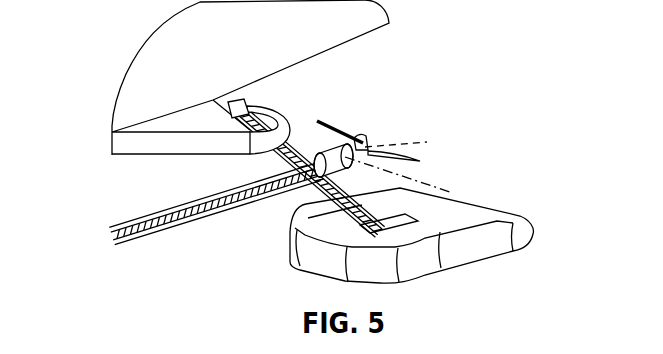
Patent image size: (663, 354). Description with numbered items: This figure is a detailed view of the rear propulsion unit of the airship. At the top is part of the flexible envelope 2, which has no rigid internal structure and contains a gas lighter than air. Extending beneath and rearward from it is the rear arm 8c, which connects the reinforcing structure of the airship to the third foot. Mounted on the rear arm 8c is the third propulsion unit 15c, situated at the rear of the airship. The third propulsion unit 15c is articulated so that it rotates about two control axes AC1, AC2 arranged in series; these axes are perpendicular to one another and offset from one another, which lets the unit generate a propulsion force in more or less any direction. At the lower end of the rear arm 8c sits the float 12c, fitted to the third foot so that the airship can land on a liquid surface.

The flexible envelope 2 is at (153, 103).
The rear arm 8c is at (322, 198).
The third propulsion unit 15c is at (362, 145).
The float 12c is at (477, 253).
The first control axis AC1 is at (407, 143).
The second control axis AC2 is at (433, 180).